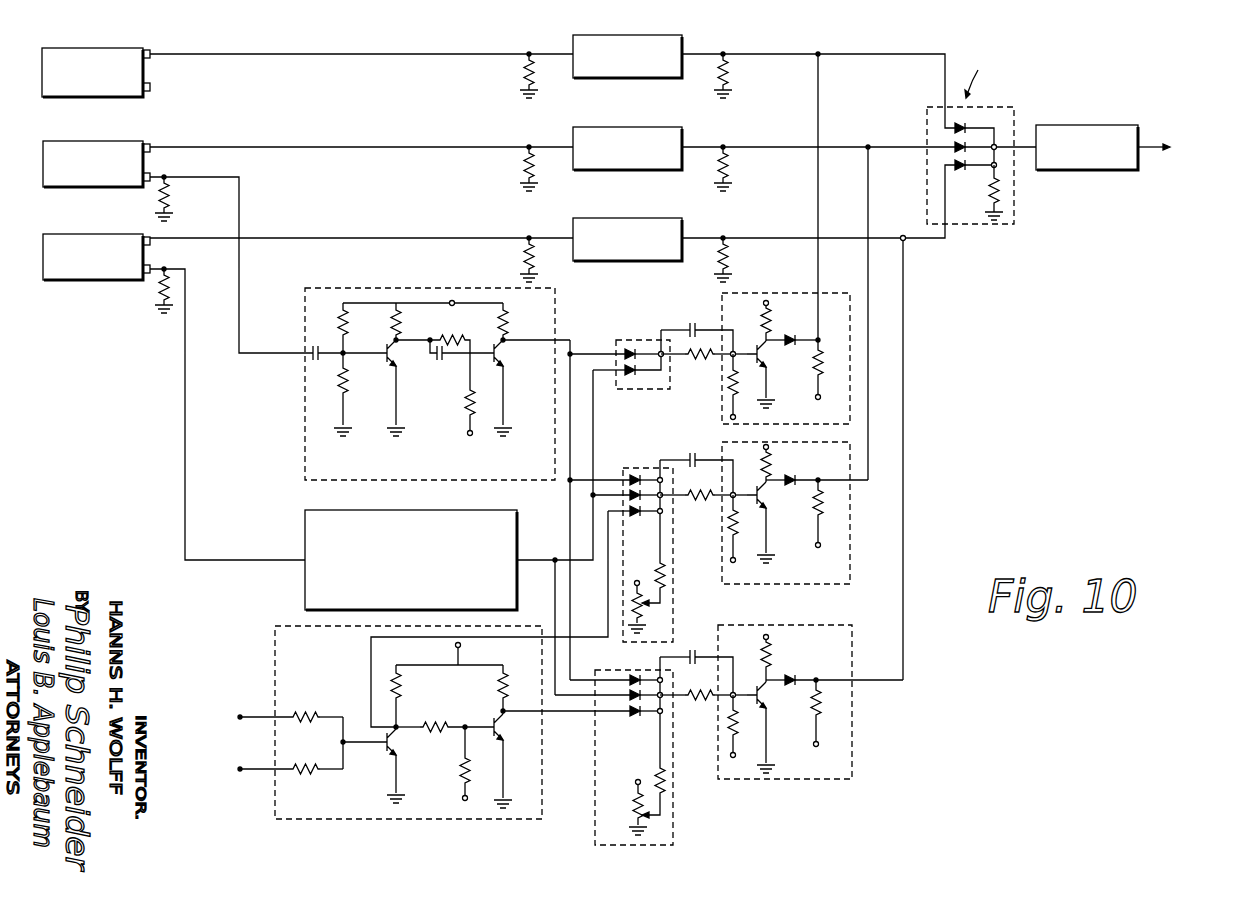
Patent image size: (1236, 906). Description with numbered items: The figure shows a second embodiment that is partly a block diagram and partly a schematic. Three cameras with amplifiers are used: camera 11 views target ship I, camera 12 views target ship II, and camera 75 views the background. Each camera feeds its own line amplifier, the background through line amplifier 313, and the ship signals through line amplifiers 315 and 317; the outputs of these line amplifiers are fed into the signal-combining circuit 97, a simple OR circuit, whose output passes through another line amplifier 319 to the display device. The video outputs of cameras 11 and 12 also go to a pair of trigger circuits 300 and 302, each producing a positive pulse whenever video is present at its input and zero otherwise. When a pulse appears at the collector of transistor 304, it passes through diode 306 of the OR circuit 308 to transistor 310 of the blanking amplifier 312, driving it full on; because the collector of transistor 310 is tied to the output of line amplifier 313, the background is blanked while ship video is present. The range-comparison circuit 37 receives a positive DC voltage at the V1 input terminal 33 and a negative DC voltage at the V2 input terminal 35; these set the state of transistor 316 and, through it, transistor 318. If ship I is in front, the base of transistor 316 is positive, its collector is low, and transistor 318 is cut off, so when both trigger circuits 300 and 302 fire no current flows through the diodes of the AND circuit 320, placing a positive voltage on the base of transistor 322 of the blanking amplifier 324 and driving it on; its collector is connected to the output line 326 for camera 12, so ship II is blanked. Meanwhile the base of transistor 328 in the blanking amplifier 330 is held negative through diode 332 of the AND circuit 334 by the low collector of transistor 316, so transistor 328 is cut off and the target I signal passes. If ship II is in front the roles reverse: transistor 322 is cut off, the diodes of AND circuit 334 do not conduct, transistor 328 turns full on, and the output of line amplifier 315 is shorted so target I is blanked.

The camera with amplifier 75 is at (42, 80).
The camera with amplifier 11 is at (43, 162).
The camera with amplifier 12 is at (43, 254).
The line amplifier 313 is at (633, 80).
The line amplifier 315 is at (636, 172).
The line amplifier 317 is at (630, 263).
The line amplifier 319 is at (1088, 172).
The signal-combining circuit 97 is at (972, 107).
The output line 326 is at (880, 238).
The trigger circuit 300 is at (404, 383).
The trigger circuit 302 is at (305, 540).
The transistor 304 is at (486, 358).
The diode 306 is at (628, 348).
The OR circuit 308 is at (668, 390).
The transistor 310 is at (752, 350).
The blanking amplifier 312 is at (757, 357).
The transistor 328 is at (762, 493).
The blanking amplifier 330 is at (757, 540).
The diode 332 is at (641, 511).
The AND circuit 334 is at (649, 551).
The transistor 322 is at (745, 684).
The blanking amplifier 324 is at (703, 739).
The AND circuit 320 is at (595, 806).
The transistor 316 is at (383, 748).
The transistor 318 is at (487, 729).
The range-comparison circuit 37 is at (350, 736).
The V1 input terminal 33 is at (262, 712).
The V2 input terminal 35 is at (262, 772).